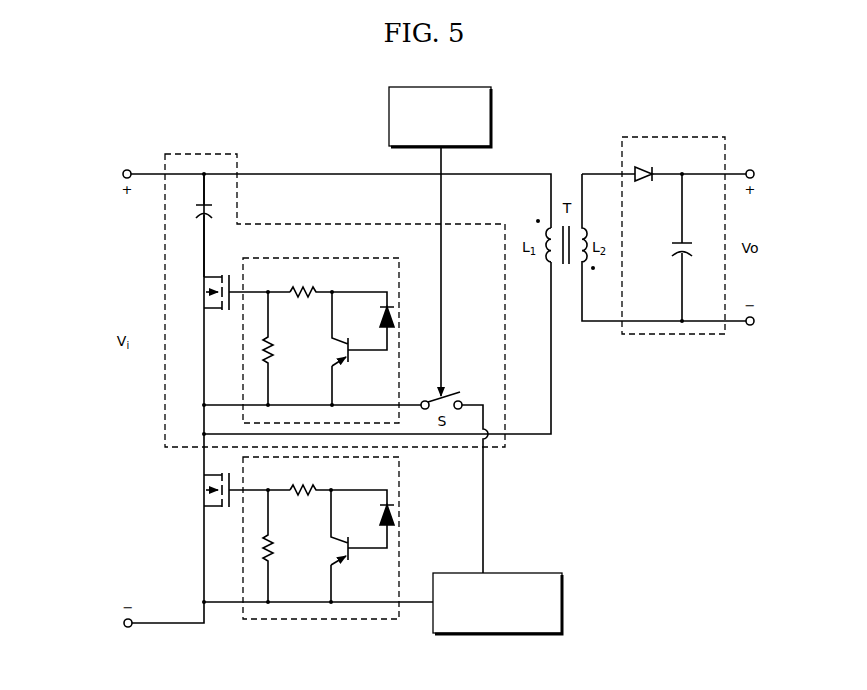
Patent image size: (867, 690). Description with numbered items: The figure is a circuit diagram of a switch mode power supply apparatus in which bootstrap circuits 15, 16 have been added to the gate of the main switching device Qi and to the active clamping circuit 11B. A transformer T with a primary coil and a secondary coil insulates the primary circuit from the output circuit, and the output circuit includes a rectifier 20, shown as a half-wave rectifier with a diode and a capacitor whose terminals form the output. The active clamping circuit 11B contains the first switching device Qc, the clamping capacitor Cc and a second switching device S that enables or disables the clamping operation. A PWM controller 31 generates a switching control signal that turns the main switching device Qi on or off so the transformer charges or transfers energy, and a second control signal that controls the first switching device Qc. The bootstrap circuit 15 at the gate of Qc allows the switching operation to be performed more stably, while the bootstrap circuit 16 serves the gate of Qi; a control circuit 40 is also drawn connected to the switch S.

The active clamping circuit 11B is at (190, 154).
The bootstrap circuit 15 is at (326, 258).
The bootstrap circuit 16 is at (325, 619).
The rectifier 20 is at (667, 137).
The PWM controller 31 is at (528, 572).
The control circuit 40 is at (461, 87).